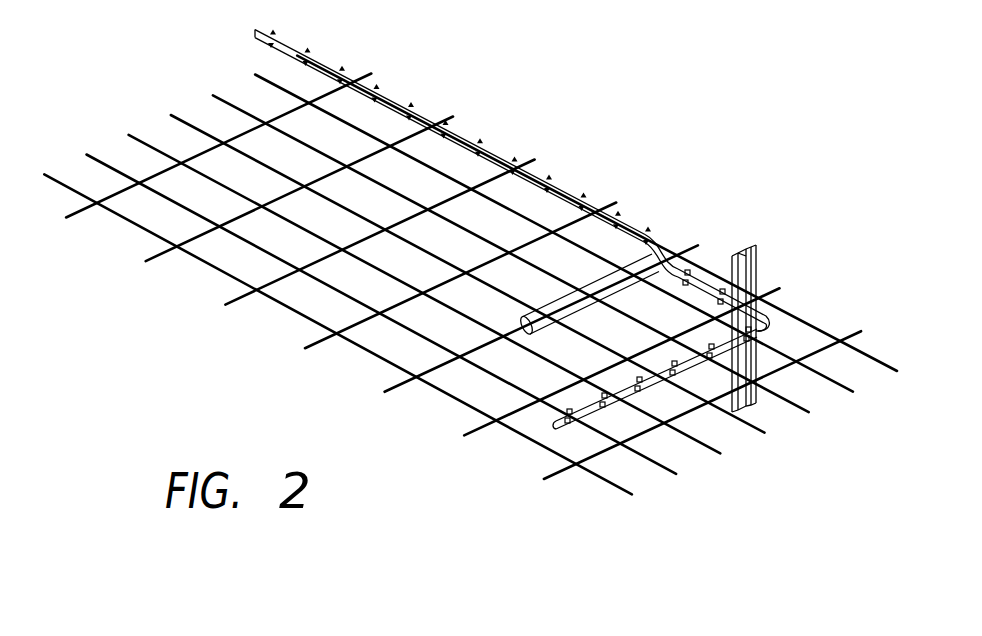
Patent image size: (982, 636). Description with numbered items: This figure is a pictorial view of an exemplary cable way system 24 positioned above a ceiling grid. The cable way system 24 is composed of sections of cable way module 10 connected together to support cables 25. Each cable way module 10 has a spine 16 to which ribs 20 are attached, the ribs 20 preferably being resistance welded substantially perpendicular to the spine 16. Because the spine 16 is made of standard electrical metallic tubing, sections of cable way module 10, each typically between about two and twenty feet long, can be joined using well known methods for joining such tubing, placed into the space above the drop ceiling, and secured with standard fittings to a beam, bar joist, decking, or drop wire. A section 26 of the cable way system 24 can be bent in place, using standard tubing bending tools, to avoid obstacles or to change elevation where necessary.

The cable way module 10 is at (494, 152).
The rib 20 is at (577, 205).
The cable way system 24 is at (605, 218).
The section 26 is at (658, 240).
The spine 16 is at (684, 265).
The cables 25 is at (560, 422).